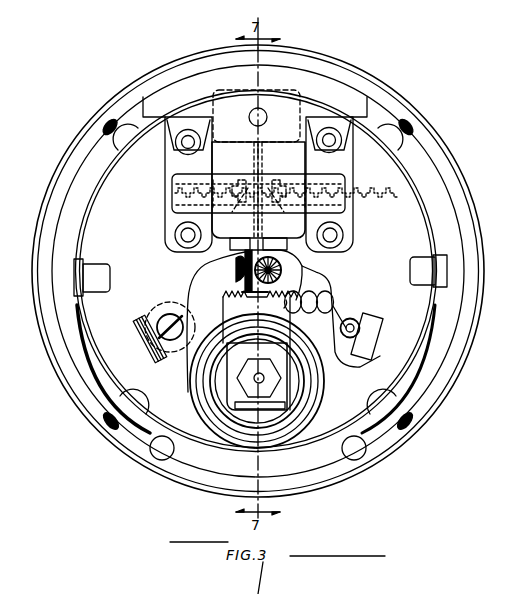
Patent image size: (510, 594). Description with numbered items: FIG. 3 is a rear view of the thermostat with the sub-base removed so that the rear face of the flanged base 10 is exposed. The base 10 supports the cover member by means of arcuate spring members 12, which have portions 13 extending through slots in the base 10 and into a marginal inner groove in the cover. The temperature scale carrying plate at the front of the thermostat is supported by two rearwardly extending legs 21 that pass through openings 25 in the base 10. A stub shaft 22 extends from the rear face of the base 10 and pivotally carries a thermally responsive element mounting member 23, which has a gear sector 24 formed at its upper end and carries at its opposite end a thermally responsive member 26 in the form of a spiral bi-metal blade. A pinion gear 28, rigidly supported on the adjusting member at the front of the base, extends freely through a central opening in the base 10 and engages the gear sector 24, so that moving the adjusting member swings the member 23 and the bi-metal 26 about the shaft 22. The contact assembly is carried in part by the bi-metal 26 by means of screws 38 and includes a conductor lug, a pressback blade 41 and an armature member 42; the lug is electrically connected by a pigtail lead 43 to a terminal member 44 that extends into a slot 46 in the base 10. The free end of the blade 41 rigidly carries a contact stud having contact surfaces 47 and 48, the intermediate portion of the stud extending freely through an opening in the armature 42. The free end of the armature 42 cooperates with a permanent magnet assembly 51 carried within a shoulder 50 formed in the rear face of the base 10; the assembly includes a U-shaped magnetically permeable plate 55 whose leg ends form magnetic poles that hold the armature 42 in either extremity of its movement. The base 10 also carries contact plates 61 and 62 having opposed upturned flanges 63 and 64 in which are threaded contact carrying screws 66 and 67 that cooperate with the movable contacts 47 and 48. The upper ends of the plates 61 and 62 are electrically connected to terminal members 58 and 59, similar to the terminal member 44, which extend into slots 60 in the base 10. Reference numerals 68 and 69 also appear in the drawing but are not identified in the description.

The flanged base 10 is at (384, 280).
The arcuate spring members 12 is at (87, 210).
The portions of spring members 13 is at (100, 132).
The rearwardly extending legs 21 is at (90, 275).
The stub shaft 22 is at (259, 372).
The thermally responsive element mounting member 23 is at (294, 387).
The gear sector 24 is at (226, 297).
The openings 25 is at (104, 292).
The thermally responsive member 26 is at (187, 383).
The pinion gear 28 is at (282, 266).
The screws 38 is at (242, 276).
The pressback blade 41 is at (228, 258).
The armature member 42 is at (292, 250).
The pigtail lead 43 is at (337, 302).
The terminal member 44 is at (362, 352).
The slot 46 is at (381, 327).
The contact surface 47 is at (236, 205).
The contact surface 48 is at (282, 205).
The shoulder 50 is at (370, 99).
The permanent magnet assembly 51 is at (318, 88).
The U-shaped magnetically permeable plate 55 is at (250, 175).
The terminal member 58 is at (327, 132).
The terminal member 59 is at (188, 134).
The slots 60 is at (142, 118).
The contact plate 61 is at (354, 166).
The contact plate 62 is at (166, 167).
The upturned flange 63 is at (350, 212).
The upturned flange 64 is at (172, 211).
The contact carrying screw 66 is at (273, 178).
The contact carrying screw 67 is at (258, 190).
The cross bar end 68 is at (346, 190).
The cross bar 69 is at (172, 191).